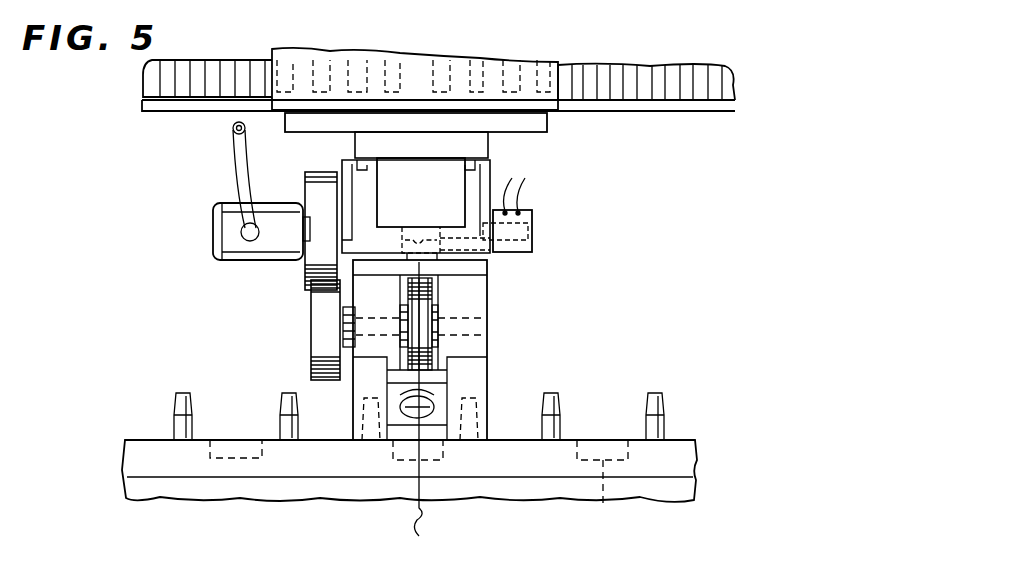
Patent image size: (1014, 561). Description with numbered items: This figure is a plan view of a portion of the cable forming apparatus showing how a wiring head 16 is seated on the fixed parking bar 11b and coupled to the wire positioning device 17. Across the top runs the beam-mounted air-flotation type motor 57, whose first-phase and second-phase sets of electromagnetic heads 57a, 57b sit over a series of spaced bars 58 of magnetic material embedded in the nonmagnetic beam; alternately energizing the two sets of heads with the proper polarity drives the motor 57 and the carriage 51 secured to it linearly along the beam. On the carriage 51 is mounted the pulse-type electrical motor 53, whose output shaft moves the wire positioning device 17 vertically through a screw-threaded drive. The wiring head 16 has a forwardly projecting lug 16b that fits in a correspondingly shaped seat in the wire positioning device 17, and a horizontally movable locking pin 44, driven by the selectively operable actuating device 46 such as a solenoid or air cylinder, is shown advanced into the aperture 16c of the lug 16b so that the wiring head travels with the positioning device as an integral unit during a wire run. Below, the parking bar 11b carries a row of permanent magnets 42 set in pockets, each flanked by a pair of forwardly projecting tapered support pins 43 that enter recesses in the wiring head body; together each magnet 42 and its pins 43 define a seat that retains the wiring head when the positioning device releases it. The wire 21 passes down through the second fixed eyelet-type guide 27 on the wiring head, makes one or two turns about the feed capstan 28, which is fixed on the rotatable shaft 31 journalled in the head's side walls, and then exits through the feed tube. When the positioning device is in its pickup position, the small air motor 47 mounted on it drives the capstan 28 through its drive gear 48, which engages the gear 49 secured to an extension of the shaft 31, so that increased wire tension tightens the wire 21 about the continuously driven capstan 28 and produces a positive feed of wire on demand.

The air-flotation type motor 57 is at (545, 66).
The first-phase set of electromagnetic heads 57a is at (347, 63).
The second-phase set of electromagnetic heads 57b is at (502, 68).
The spaced bars of magnetic material 58 is at (250, 72).
The carriage 51 is at (480, 149).
The pulse-type electrical motor 53 is at (380, 185).
The aperture 16c is at (418, 238).
The wire positioning device 17 is at (534, 194).
The actuating device 46 is at (533, 232).
The locking pin 44 is at (470, 240).
The air motor 47 is at (212, 230).
The drive wheel or gear 48 is at (310, 262).
The wheel or gear 49 is at (318, 323).
The lug 16b is at (437, 258).
The feed capstan 28 is at (433, 303).
The rotatable shaft 31 is at (470, 336).
The wiring head 16 is at (512, 352).
The second fixed eyelet-type guide 27 is at (440, 393).
The wire 21 is at (423, 490).
The fixed parking bar 11b is at (160, 440).
The permanent magnet 42 is at (393, 450).
The tapered support pin 43 is at (280, 413).